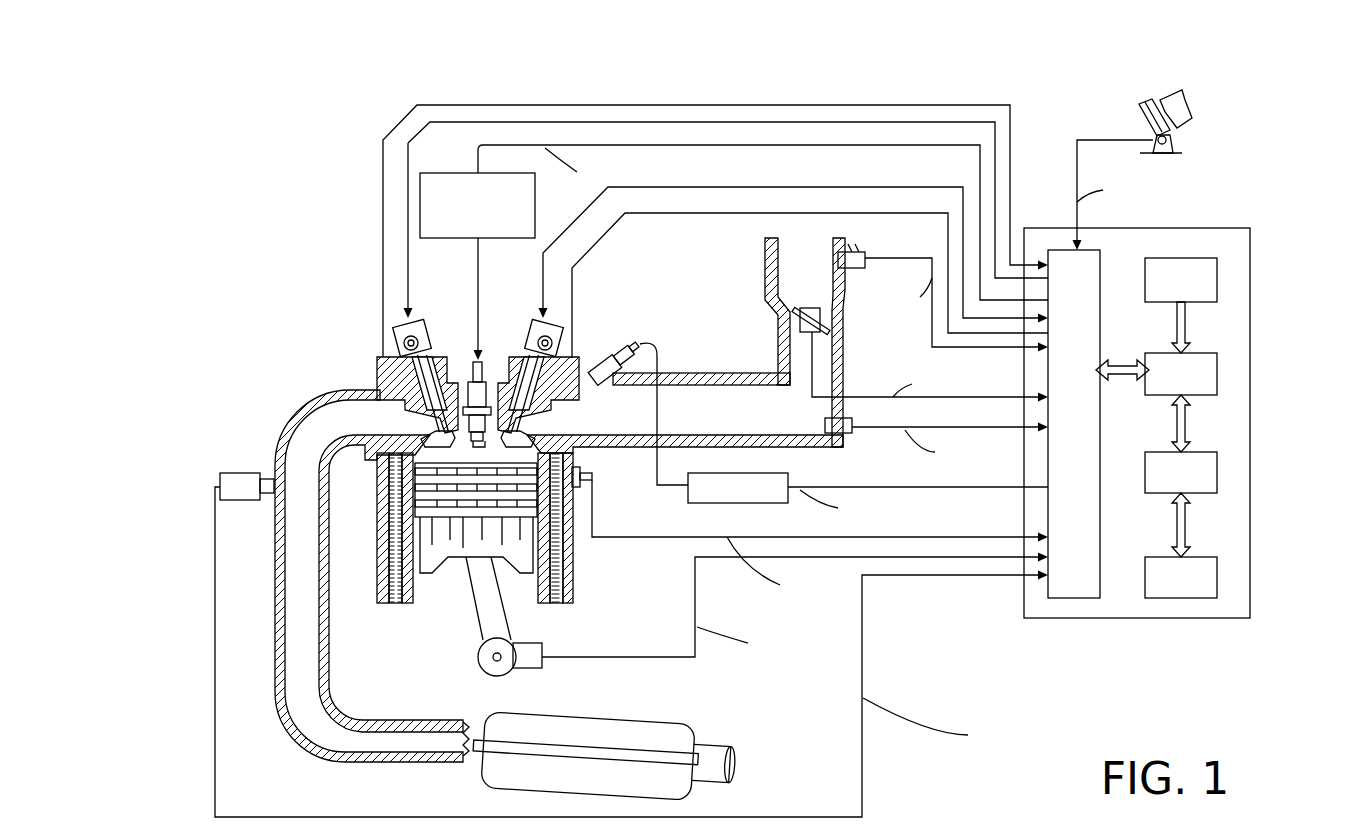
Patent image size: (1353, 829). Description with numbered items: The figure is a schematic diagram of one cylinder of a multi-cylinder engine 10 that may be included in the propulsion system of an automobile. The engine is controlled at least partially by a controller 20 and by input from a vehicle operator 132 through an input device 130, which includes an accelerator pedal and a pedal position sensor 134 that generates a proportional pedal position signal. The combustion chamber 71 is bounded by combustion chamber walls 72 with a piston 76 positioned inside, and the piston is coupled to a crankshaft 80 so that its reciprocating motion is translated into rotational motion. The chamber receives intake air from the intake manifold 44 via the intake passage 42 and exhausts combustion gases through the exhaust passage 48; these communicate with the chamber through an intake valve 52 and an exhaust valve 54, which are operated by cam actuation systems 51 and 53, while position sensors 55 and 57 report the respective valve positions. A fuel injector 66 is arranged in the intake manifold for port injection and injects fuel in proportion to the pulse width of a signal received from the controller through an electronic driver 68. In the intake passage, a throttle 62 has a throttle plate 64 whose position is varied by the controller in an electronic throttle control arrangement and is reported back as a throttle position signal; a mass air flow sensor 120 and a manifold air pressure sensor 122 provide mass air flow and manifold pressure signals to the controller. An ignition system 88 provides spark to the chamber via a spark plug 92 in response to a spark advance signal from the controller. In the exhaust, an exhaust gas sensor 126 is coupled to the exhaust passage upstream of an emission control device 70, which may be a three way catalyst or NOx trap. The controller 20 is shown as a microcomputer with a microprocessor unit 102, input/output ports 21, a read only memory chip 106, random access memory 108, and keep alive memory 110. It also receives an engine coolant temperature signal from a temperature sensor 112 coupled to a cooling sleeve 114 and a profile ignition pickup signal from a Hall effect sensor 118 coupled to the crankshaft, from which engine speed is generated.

The engine 10 is at (310, 304).
The controller 20 is at (1245, 228).
The input/output ports 21 is at (1100, 258).
The intake passage 42 is at (817, 286).
The intake manifold 44 is at (757, 426).
The exhaust passage 48 is at (357, 430).
The cam actuation system 51 is at (537, 325).
The intake valve 52 is at (530, 428).
The cam actuation system 53 is at (418, 325).
The exhaust valve 54 is at (433, 425).
The position sensor 55 is at (555, 346).
The position sensor 57 is at (395, 345).
The throttle 62 is at (820, 318).
The throttle plate 64 is at (792, 316).
The fuel injector 66 is at (610, 354).
The electronic driver 68 is at (712, 503).
The emission control device 70 is at (660, 718).
The combustion chamber 71 is at (475, 453).
The combustion chamber walls 72 is at (420, 590).
The piston 76 is at (478, 552).
The crankshaft 80 is at (483, 672).
The ignition system 88 is at (430, 173).
The spark plug 92 is at (480, 366).
The microprocessor unit 102 is at (1217, 372).
The read only memory chip 106 is at (1217, 282).
The random access memory 108 is at (1217, 474).
The keep alive memory 110 is at (1217, 578).
The temperature sensor 112 is at (588, 480).
The cooling sleeve 114 is at (567, 555).
The Hall effect sensor 118 is at (535, 668).
The mass air flow sensor 120 is at (866, 252).
The manifold air pressure sensor 122 is at (853, 433).
The exhaust gas sensor 126 is at (220, 478).
The input device 130 is at (1138, 108).
The vehicle operator 132 is at (1190, 105).
The pedal position sensor 134 is at (1170, 141).